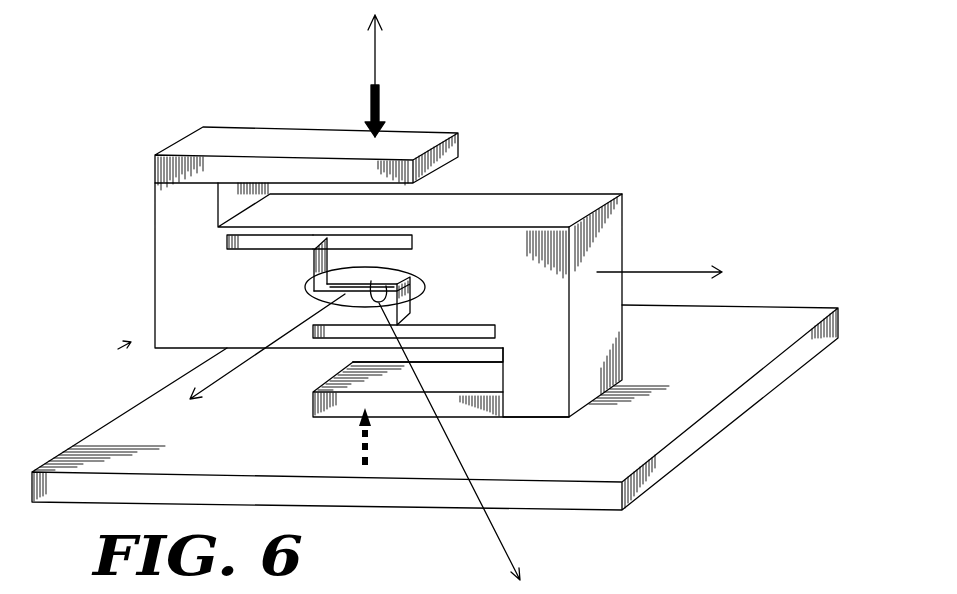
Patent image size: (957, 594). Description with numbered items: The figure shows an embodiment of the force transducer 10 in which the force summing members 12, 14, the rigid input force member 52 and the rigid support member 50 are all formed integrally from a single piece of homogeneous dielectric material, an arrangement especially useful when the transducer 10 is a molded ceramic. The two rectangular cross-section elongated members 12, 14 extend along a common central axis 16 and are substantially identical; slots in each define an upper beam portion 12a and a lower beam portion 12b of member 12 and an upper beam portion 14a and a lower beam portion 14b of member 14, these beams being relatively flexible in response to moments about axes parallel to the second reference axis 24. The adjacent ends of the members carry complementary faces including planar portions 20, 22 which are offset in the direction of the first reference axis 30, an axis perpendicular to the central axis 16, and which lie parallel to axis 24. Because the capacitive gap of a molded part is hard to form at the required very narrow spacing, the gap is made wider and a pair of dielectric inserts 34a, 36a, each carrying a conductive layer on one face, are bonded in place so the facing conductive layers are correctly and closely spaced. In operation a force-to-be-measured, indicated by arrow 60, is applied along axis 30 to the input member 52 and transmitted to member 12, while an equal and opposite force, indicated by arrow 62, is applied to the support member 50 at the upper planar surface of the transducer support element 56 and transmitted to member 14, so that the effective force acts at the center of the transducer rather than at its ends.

The transducer 10 is at (118, 349).
The elongated member 12 is at (173, 278).
The upper beam portion 12a is at (270, 232).
The lower beam portion 12b is at (328, 345).
The elongated member 14 is at (524, 257).
The upper beam portion 14a is at (444, 353).
The lower beam portion 14b is at (372, 240).
The central axis 16 is at (668, 272).
The planar portion 20 is at (402, 303).
The planar portion 22 is at (392, 285).
The second reference axis 24 is at (227, 374).
The first reference axis 30 is at (376, 58).
The insert 34a is at (340, 293).
The insert 36a is at (313, 267).
The rigid support member 50 is at (545, 404).
The rigid input force member 52 is at (171, 182).
The transducer support element 56 is at (724, 404).
The arrow indicating force-to-be-measured 60 is at (378, 108).
The arrow indicating equal and opposite force 62 is at (371, 443).